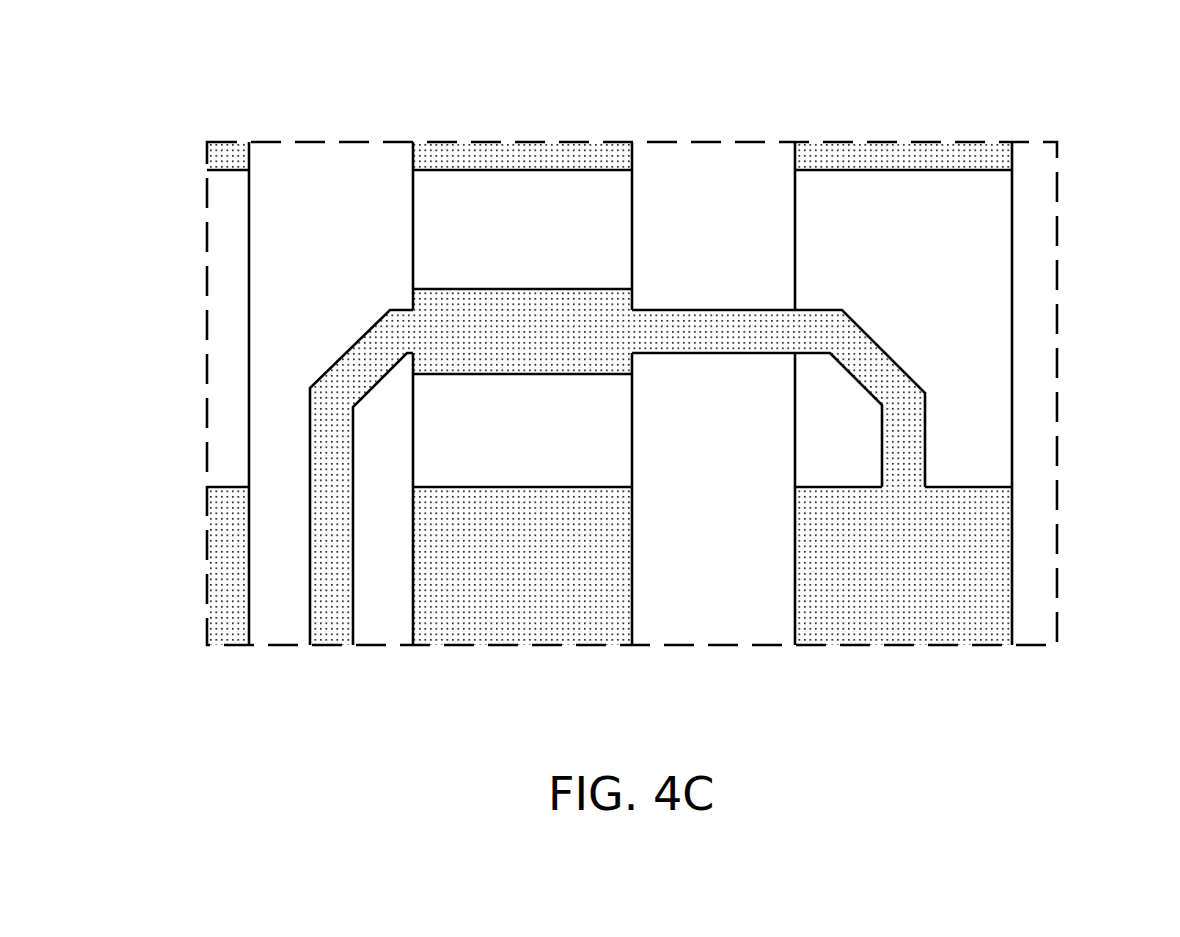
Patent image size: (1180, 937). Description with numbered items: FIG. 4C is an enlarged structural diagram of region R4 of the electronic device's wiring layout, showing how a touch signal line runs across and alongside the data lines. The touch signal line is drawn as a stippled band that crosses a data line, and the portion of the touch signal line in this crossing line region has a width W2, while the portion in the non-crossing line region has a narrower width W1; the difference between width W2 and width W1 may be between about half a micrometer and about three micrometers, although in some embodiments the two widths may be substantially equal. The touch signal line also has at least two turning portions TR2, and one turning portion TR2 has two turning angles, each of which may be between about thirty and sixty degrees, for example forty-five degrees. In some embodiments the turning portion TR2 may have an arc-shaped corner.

The region R4 is at (119, 78).
The turning portion TR2 is at (344, 349).
The width W1 is at (395, 677).
The width W2 is at (522, 369).